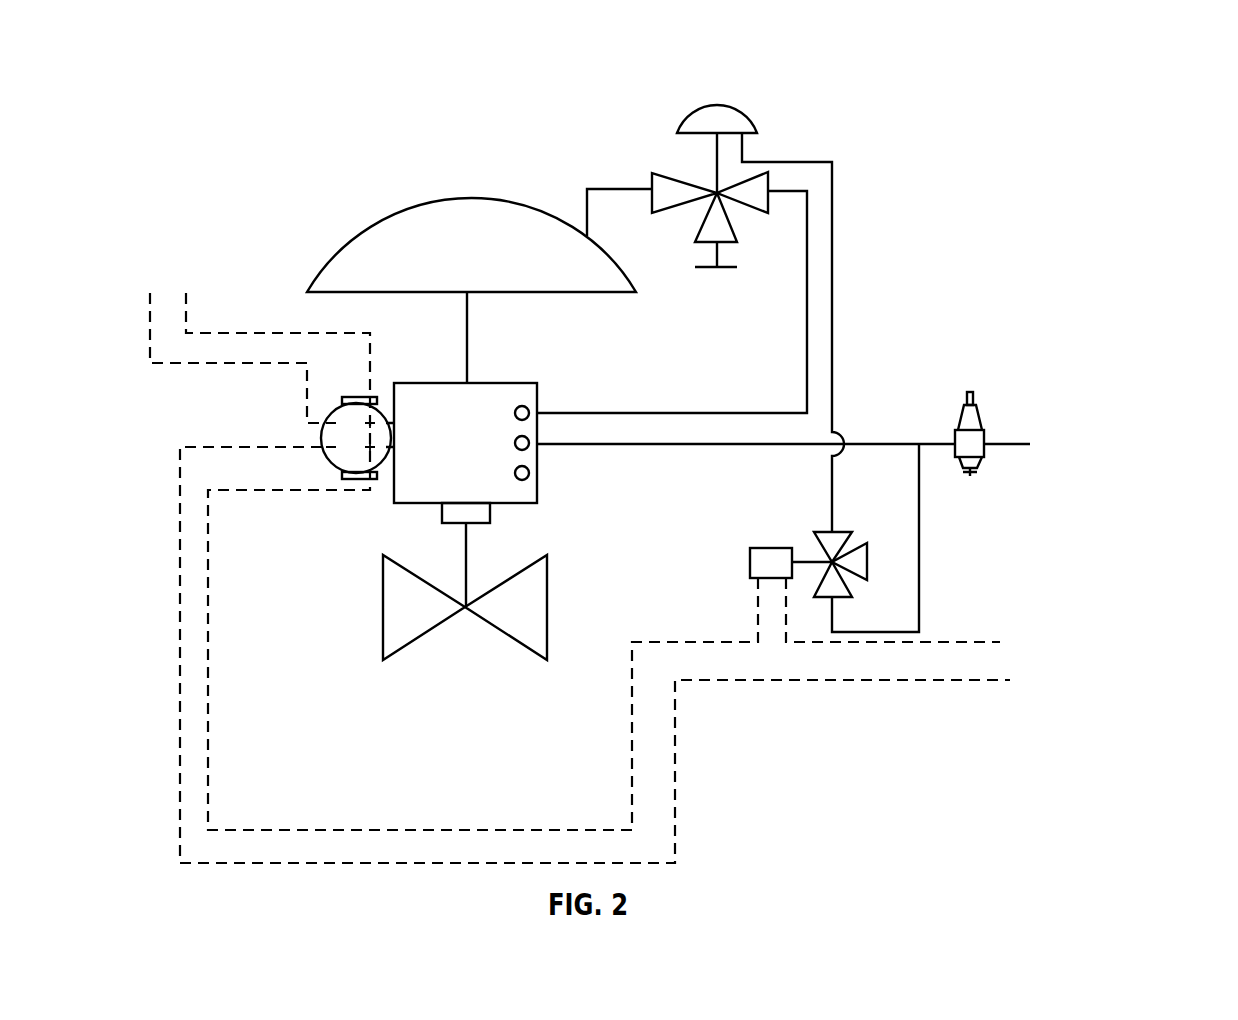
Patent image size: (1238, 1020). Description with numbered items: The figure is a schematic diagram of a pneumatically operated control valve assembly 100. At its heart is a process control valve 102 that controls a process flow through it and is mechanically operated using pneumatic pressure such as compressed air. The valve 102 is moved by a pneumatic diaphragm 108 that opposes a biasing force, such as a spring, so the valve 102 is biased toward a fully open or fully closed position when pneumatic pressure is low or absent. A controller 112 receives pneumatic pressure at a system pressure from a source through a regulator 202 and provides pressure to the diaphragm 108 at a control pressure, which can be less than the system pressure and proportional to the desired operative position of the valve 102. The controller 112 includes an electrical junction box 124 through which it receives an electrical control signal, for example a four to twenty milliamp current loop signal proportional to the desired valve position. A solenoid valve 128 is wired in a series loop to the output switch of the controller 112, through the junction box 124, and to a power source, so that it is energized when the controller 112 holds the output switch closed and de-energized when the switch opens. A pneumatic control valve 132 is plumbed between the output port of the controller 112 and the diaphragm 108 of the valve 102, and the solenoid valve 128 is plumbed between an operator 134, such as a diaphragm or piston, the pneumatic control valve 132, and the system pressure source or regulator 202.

The pneumatically operated control valve assembly 100 is at (238, 86).
The process control valve 102 is at (383, 607).
The pneumatic diaphragm 108 is at (368, 230).
The controller 112 is at (538, 478).
The electrical junction box 124 is at (322, 440).
The solenoid valve 128 is at (726, 563).
The pneumatic control valve 132 is at (732, 97).
The operator 134 is at (701, 108).
The regulator 202 is at (952, 437).